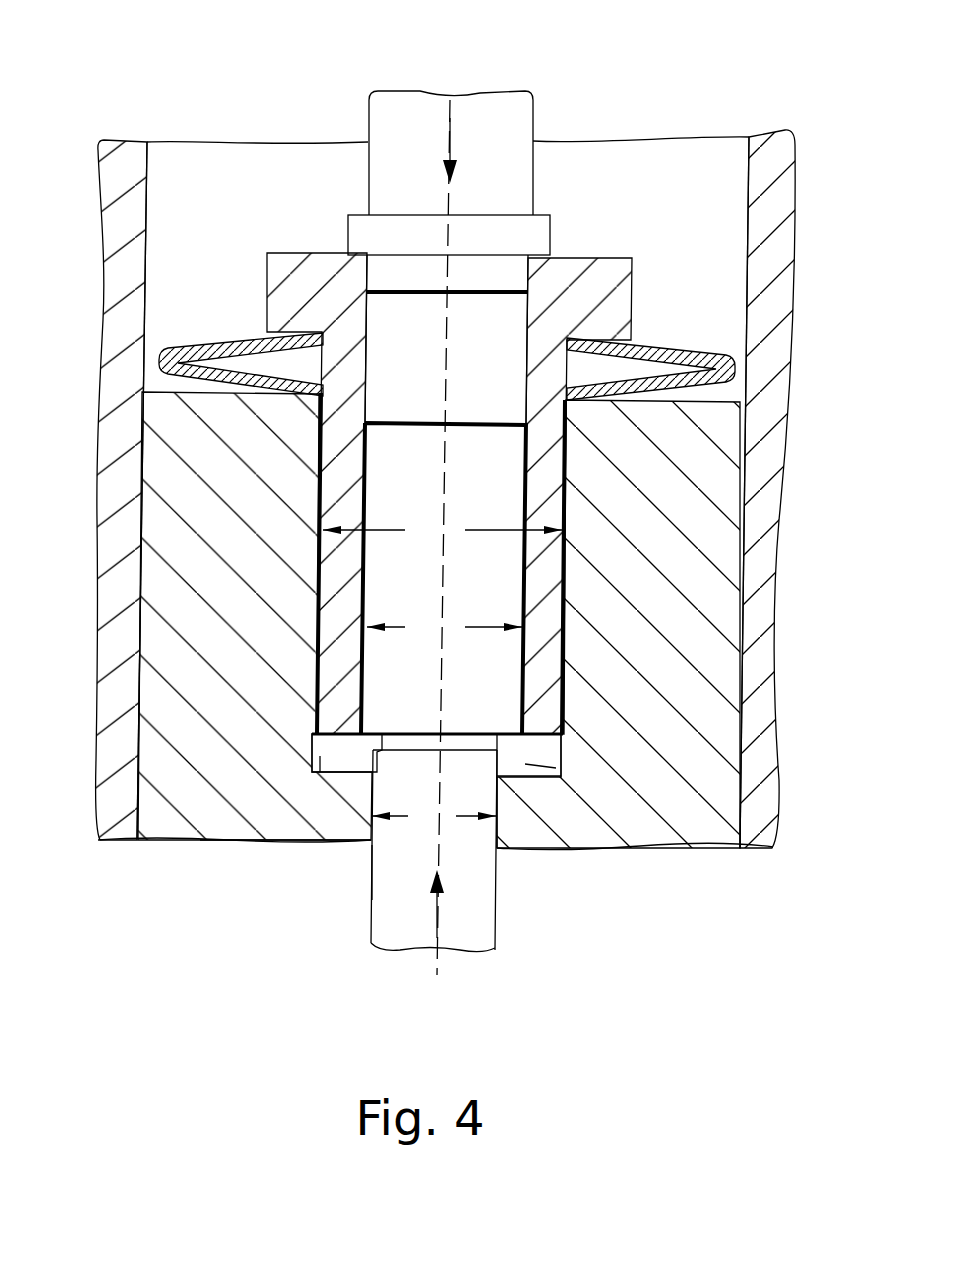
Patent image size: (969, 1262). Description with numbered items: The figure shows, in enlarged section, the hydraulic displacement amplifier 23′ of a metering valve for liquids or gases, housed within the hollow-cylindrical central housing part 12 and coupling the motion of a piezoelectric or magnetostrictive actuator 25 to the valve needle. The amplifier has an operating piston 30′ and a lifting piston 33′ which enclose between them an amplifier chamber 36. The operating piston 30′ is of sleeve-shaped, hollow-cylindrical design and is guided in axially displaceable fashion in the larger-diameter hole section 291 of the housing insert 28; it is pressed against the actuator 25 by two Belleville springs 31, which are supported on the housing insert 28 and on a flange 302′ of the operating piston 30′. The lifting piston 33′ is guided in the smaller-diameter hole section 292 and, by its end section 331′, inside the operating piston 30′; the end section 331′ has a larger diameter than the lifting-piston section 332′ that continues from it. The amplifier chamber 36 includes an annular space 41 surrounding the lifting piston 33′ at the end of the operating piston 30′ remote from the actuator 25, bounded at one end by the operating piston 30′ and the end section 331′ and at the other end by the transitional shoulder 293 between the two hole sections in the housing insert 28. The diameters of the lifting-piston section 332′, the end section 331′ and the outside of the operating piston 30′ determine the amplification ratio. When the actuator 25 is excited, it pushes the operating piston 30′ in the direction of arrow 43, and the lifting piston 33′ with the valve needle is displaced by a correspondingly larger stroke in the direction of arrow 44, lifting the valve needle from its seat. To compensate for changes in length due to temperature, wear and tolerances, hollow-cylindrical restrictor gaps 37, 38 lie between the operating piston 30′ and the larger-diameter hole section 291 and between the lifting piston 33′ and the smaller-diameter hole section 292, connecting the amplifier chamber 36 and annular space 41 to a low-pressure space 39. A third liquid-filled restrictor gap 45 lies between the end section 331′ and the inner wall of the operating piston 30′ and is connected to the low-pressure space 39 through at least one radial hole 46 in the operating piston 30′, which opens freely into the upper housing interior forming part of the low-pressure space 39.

The central housing part 12 is at (767, 207).
The displacement amplifier 23′ is at (98, 592).
The actuator 25 is at (400, 130).
The housing insert 28 is at (177, 710).
The operating piston 30′ is at (350, 317).
The Belleville springs 31 is at (673, 350).
The lifting piston 33′ is at (393, 912).
The amplifier chamber 36 is at (548, 755).
The restrictor gap 37 is at (567, 617).
The restrictor gap 38 is at (503, 847).
The low-pressure space 39 is at (192, 178).
The annular space 41 is at (556, 768).
The arrow 43 is at (453, 142).
The arrow 44 is at (437, 913).
The restrictor gap 45 is at (525, 556).
The radial hole 46 is at (543, 366).
The larger-diameter hole section 291 is at (275, 787).
The smaller-diameter hole section 292 is at (370, 840).
The transitional shoulder 293 is at (338, 785).
The flange 302′ is at (597, 283).
The end section 331′ is at (497, 492).
The lifting-piston section 332′ is at (372, 897).